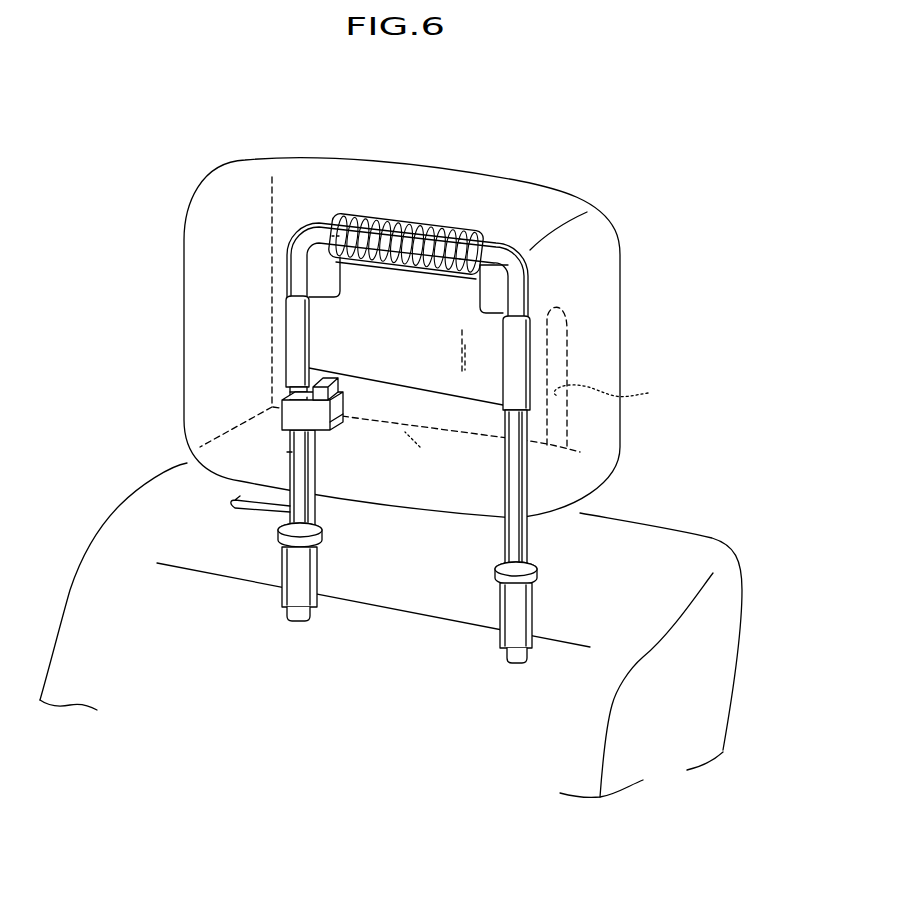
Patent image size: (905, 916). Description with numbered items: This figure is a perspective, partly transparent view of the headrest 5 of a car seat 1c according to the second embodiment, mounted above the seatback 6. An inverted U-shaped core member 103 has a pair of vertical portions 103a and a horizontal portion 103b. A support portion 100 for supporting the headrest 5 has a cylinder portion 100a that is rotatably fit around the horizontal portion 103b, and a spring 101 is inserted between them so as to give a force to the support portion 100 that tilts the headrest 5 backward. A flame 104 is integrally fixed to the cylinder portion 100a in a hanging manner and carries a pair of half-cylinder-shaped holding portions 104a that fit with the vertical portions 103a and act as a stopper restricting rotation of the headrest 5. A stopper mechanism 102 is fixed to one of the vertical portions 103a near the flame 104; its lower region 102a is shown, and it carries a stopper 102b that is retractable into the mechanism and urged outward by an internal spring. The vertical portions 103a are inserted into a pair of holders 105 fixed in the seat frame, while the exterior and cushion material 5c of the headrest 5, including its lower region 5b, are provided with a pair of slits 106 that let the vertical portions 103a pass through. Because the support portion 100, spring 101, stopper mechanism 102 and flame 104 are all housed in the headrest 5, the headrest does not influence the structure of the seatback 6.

The car seat 1c is at (482, 309).
The headrest 5 is at (500, 193).
The headrest bottom wall 5b is at (580, 480).
The cushion material 5c is at (580, 434).
The seatback 6 is at (713, 550).
The support portion 100 is at (408, 217).
The cylinder portion 100a is at (373, 262).
The spring 101 is at (342, 213).
The stopper mechanism 102 is at (283, 416).
The lock block lower portion 102a is at (320, 428).
The stopper 102b is at (337, 377).
The core member 103 is at (530, 283).
The vertical portions 103a is at (290, 437).
The horizontal portion 103b is at (495, 240).
The flame 104 is at (430, 307).
The holding portions 104a is at (293, 340).
The holders 105 is at (307, 567).
The slits 106 is at (548, 428).